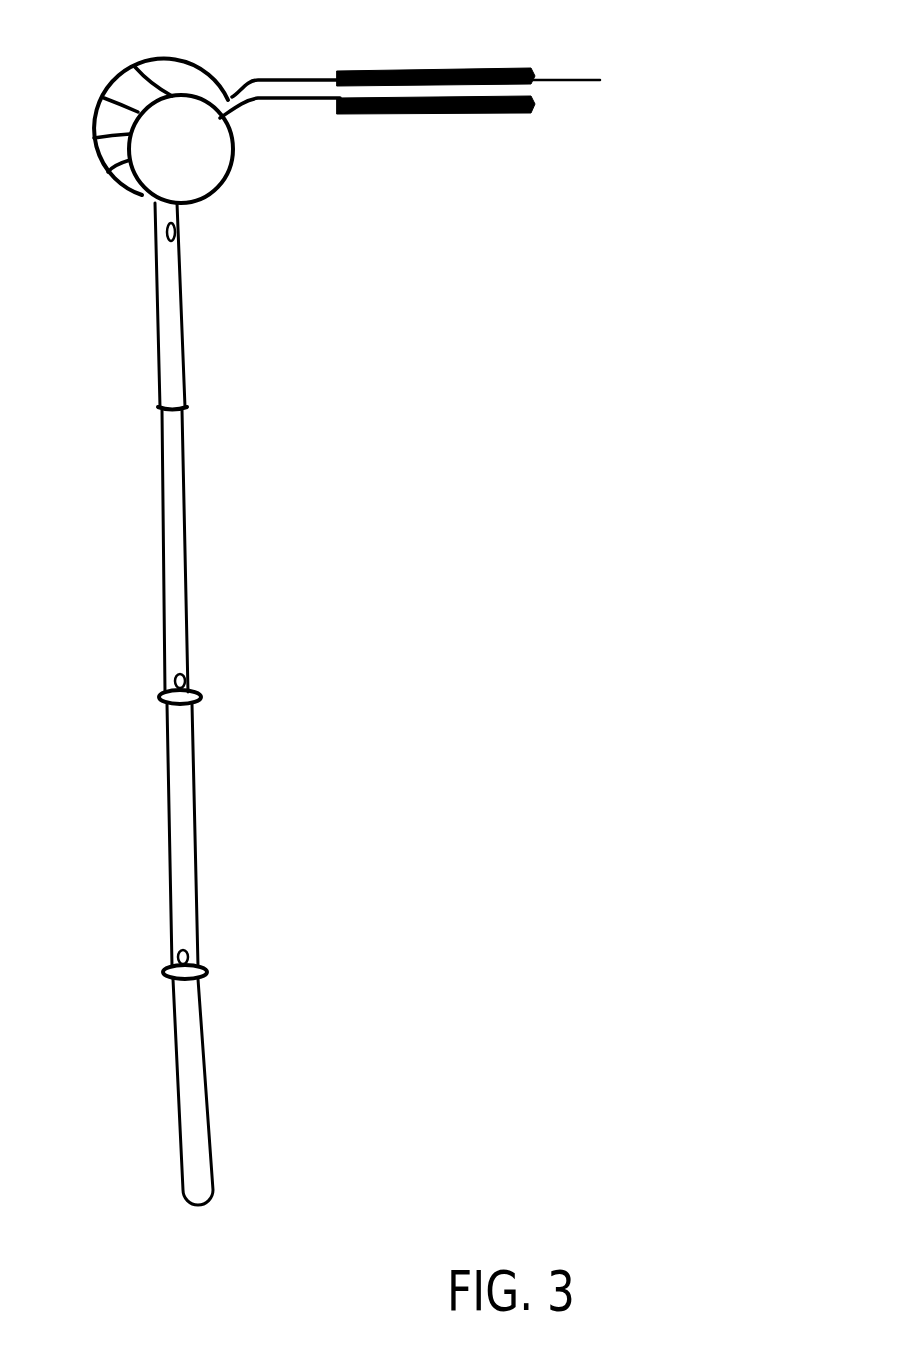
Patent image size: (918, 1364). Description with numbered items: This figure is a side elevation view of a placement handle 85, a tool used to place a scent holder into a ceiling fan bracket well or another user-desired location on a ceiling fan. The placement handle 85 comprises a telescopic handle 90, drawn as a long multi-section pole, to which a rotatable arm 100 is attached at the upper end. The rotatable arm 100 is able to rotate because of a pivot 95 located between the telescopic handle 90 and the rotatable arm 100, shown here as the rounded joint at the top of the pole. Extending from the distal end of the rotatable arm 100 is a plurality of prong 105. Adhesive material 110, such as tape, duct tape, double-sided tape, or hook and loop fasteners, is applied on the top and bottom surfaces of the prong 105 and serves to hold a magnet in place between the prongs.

The placement handle 85 is at (440, 575).
The telescopic handle 90 is at (167, 762).
The pivot 95 is at (152, 201).
The rotatable arm 100 is at (346, 125).
The prong 105 is at (610, 82).
The adhesive material 110 is at (463, 70).